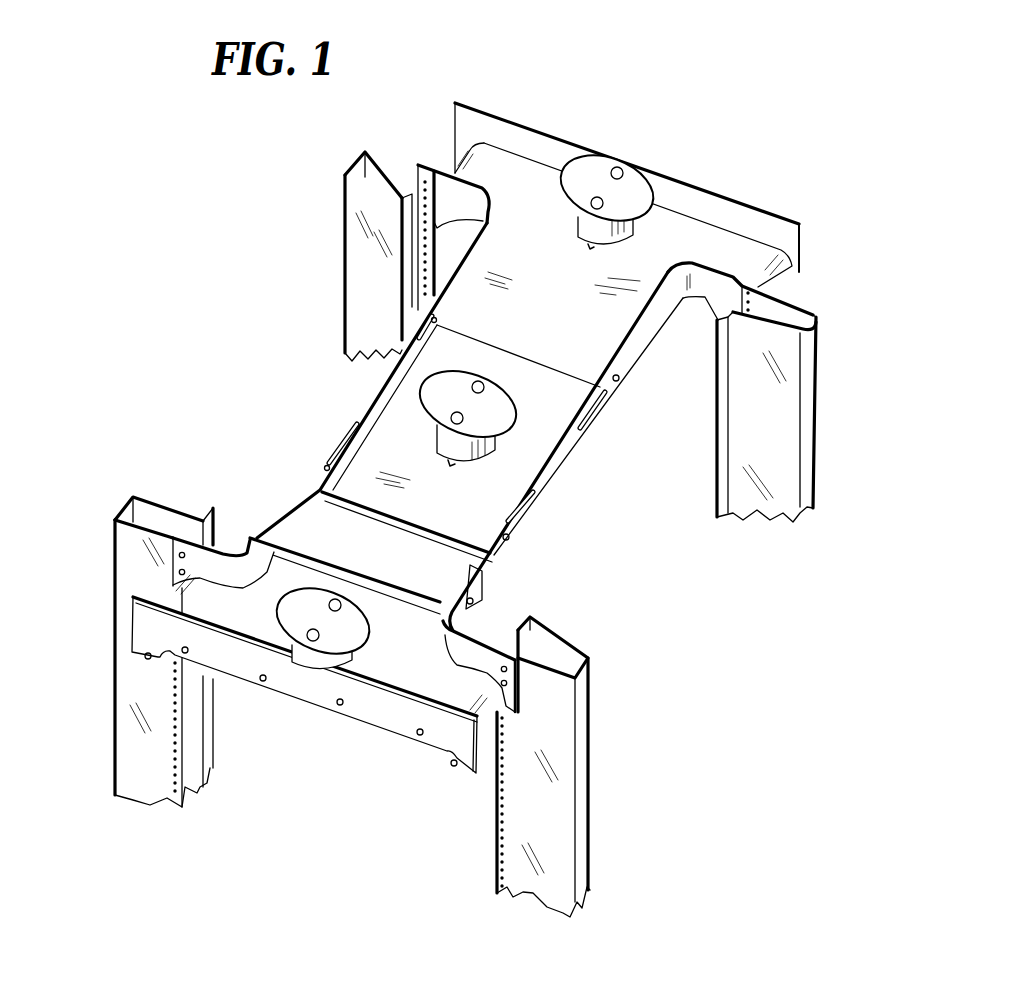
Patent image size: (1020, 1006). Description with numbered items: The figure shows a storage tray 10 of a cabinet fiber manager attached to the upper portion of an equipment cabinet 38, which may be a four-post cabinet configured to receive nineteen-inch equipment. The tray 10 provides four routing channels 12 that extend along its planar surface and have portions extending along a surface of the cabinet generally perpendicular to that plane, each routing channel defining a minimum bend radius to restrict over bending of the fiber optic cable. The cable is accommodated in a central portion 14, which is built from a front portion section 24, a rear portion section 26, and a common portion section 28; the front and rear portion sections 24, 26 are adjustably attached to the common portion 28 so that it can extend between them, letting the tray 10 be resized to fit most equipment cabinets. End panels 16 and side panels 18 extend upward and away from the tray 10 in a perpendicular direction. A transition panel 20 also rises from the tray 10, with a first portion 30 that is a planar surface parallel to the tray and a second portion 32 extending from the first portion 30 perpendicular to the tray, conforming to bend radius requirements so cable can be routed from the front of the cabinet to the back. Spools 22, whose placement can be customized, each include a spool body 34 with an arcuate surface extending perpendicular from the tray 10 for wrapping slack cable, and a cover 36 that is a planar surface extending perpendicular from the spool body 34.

The storage tray 10 is at (453, 403).
The routing channels 12 is at (464, 173).
The central portion 14 is at (312, 262).
The end panel 16 is at (700, 207).
The side panel 18 is at (557, 463).
The transition panel 20 is at (287, 532).
The spools 22 is at (428, 398).
The front portion section 24 is at (550, 795).
The rear portion section 26 is at (862, 262).
The common portion section 28 is at (658, 407).
The first portion 30 is at (296, 494).
The second portion 32 is at (250, 537).
The spool body 34 is at (447, 435).
The cover 36 is at (437, 388).
The equipment cabinet 38 is at (780, 429).